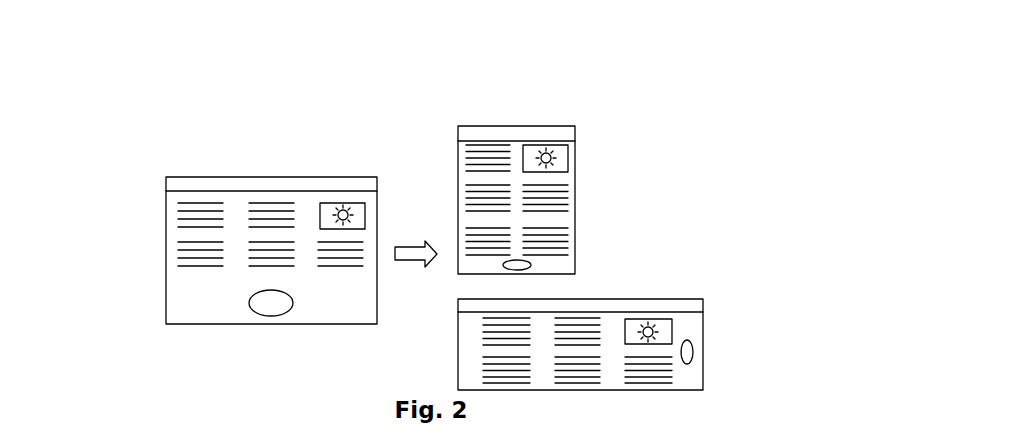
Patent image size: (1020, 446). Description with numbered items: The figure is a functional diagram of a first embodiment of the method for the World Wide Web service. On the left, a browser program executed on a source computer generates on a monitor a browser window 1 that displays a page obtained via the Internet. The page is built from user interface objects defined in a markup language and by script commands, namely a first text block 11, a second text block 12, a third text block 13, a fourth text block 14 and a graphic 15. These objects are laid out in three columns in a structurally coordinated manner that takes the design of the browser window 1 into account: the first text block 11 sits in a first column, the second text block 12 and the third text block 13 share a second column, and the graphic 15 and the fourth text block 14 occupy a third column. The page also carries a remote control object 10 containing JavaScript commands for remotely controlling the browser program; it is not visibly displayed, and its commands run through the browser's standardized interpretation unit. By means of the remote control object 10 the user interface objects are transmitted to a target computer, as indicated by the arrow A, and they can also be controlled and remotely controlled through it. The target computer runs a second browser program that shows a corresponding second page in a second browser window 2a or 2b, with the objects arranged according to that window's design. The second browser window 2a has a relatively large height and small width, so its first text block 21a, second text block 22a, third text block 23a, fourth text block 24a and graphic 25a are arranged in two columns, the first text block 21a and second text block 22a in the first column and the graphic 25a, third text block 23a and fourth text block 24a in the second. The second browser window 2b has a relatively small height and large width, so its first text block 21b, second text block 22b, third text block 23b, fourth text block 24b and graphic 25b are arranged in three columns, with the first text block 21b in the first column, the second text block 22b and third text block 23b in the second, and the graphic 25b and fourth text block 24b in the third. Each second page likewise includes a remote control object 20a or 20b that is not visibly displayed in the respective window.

The browser window 1 is at (202, 164).
The remote control object 10 is at (272, 293).
The first text block 11 is at (220, 203).
The second text block 12 is at (255, 219).
The third text block 13 is at (275, 250).
The fourth text block 14 is at (335, 263).
The graphic 15 is at (336, 206).
The arrow A is at (412, 252).
The second browser window 2a is at (523, 115).
The remote control object 20a is at (533, 265).
The first text block 21a is at (483, 163).
The second text block 22a is at (472, 238).
The third text block 23a is at (558, 195).
The fourth text block 24a is at (577, 238).
The graphic 25a is at (553, 153).
The second browser window 2b is at (729, 309).
The remote control object 20b is at (693, 352).
The first text block 21b is at (505, 355).
The second text block 22b is at (505, 327).
The third text block 23b is at (583, 365).
The fourth text block 24b is at (657, 386).
The graphic 25b is at (670, 338).